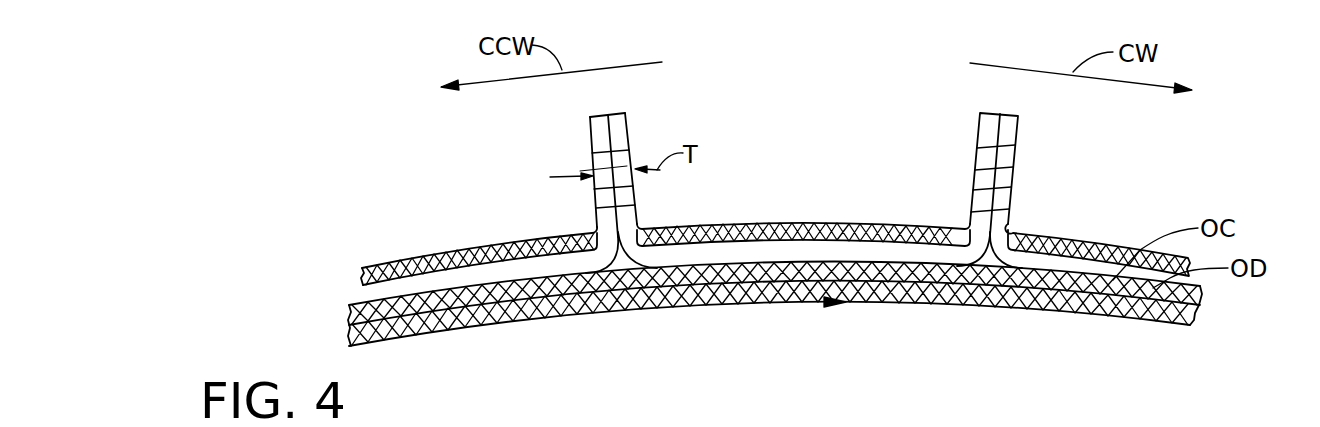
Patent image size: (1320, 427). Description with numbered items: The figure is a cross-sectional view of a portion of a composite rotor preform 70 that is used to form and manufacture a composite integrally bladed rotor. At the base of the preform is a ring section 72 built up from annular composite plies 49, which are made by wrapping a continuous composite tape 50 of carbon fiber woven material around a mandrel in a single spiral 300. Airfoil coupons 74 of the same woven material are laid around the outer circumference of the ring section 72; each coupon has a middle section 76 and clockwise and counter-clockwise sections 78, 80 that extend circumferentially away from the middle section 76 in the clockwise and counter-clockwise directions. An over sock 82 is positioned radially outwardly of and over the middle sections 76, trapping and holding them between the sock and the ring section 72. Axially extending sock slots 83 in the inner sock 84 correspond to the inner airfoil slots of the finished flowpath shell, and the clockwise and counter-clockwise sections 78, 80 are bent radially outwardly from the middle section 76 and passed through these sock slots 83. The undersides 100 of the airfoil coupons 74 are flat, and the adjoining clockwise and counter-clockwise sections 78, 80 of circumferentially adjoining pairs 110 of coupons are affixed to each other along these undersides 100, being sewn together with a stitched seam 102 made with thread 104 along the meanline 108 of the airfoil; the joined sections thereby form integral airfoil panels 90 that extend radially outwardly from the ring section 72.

The composite plies 49 is at (452, 300).
The composite tape 50 is at (560, 303).
The composite rotor preform 70 is at (466, 229).
The ring section 72 is at (1043, 313).
The airfoil coupons 74 is at (710, 224).
The middle section 76 is at (771, 252).
The clockwise section 78 is at (985, 130).
The counter-clockwise section 80 is at (622, 130).
The over sock 82 is at (523, 240).
The sock slots 83 is at (984, 263).
The inner sock 84 is at (852, 224).
The airfoil panels 90 is at (615, 113).
The undersides 100 is at (998, 142).
The stitched seam 102 is at (600, 152).
The thread 104 is at (624, 190).
The meanline 108 is at (996, 197).
The circumferentially adjoining pairs 110 is at (958, 222).
The spiral 300 is at (800, 302).